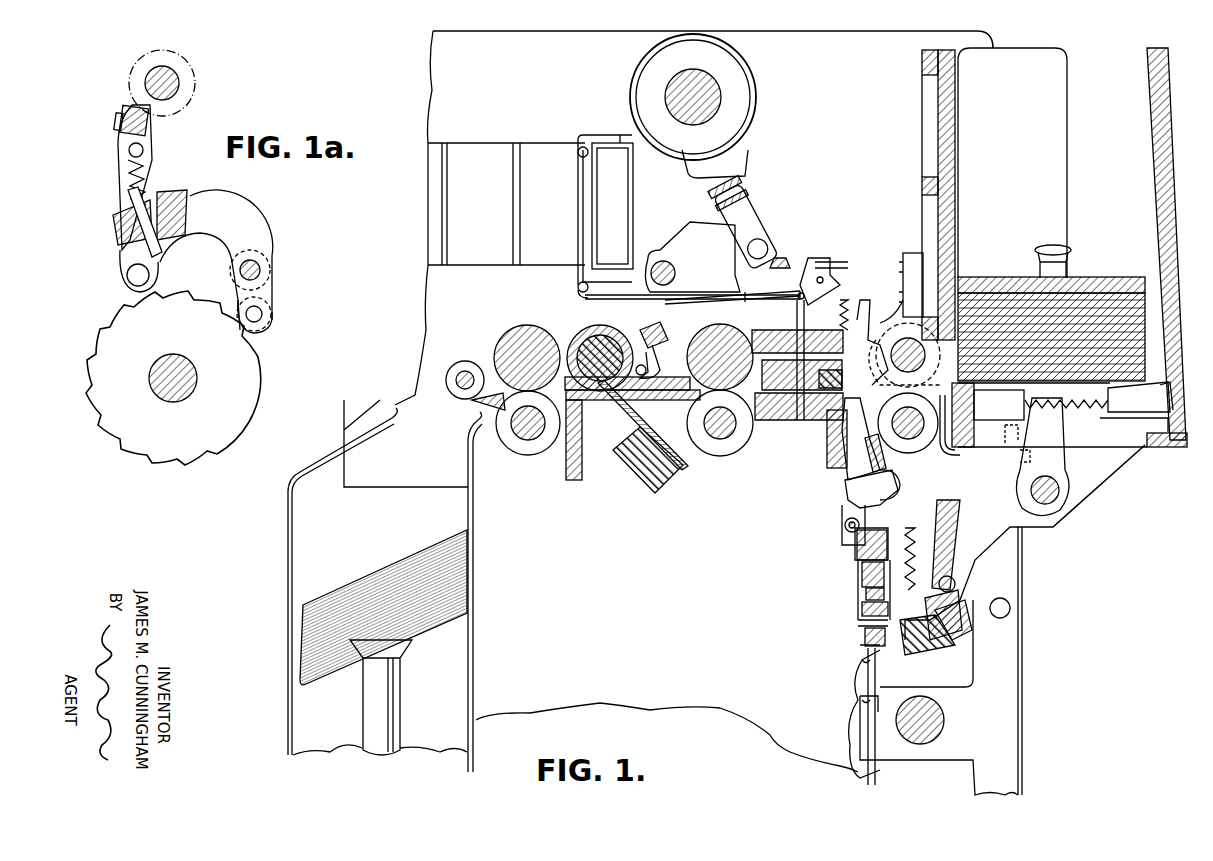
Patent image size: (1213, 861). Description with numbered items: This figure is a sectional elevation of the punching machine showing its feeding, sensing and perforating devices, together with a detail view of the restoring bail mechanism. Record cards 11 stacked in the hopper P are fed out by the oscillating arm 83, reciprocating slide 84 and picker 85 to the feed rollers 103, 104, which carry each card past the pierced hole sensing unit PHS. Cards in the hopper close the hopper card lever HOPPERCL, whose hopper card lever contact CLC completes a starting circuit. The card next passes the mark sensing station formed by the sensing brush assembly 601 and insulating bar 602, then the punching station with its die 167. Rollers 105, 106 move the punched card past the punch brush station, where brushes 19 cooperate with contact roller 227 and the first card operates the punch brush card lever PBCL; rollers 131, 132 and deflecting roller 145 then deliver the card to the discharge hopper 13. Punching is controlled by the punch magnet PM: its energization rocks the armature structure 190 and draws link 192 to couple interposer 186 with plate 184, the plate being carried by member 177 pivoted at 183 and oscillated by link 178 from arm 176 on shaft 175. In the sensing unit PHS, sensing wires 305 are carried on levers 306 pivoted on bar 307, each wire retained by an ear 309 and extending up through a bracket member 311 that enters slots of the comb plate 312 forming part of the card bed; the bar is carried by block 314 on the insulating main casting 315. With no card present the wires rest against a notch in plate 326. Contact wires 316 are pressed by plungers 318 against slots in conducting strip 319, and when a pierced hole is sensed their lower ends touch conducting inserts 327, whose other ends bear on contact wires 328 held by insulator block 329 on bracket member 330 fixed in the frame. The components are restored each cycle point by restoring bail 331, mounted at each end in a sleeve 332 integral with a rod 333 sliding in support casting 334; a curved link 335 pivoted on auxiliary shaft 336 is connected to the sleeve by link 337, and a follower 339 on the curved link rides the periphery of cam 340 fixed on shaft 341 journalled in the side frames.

In FIG. 1A, the feed roller 104 is at (196, 85).
In FIG. 1, the feed roller 104 is at (935, 443).
In FIG. 1A, the restoring bail 331 is at (122, 110).
In FIG. 1, the restoring bail 331 is at (880, 462).
In FIG. 1A, the sleeve 332 is at (116, 118).
In FIG. 1A, the link 337 is at (118, 175).
In FIG. 1A, the support casting 334 is at (114, 224).
In FIG. 1A, the rod 333 is at (160, 256).
In FIG. 1A, the curved link 335 is at (258, 232).
In FIG. 1A, the auxiliary shaft 336 is at (262, 272).
In FIG. 1A, the follower 339 is at (272, 320).
In FIG. 1A, the cam 340 is at (130, 327).
In FIG. 1, the cam 340 is at (845, 700).
In FIG. 1A, the shaft 341 is at (200, 378).
In FIG. 1, the shaft 341 is at (942, 712).
In FIG. 1, the shaft 175 is at (665, 97).
In FIG. 1, the arm 176 is at (745, 157).
In FIG. 1, the link 178 is at (752, 220).
In FIG. 1, the member 177 is at (700, 236).
In FIG. 1, the pivot 183 is at (663, 262).
In FIG. 1, the plate 184 is at (785, 272).
In FIG. 1, the armature structure 190 is at (577, 215).
In FIG. 1, the punch magnet PM is at (612, 206).
In FIG. 1, the link 192 is at (735, 300).
In FIG. 1, the interposer 186 is at (818, 262).
In FIG. 1, the sensing brush assembly 601 is at (828, 430).
In FIG. 1, the roller 131 is at (505, 330).
In FIG. 1, the contact roller 227 is at (583, 330).
In FIG. 1, the punch brush card lever PBCL is at (645, 330).
In FIG. 1, the roller 105 is at (728, 332).
In FIG. 1, the deflecting roller 145 is at (456, 364).
In FIG. 1, the roller 132 is at (512, 452).
In FIG. 1, the roller 106 is at (716, 457).
In FIG. 1, the die 167 is at (773, 436).
In FIG. 1, the brushes 19 is at (620, 410).
In FIG. 1, the plate 326 is at (872, 340).
In FIG. 1, the insulating bar 602 is at (858, 350).
In FIG. 1, the hopper P is at (1100, 234).
In FIG. 1, the record cards 11 is at (330, 592).
In FIG. 1, the discharge hopper 13 is at (445, 709).
In FIG. 1, the feed roller 103 is at (988, 415).
In FIG. 1, the reciprocating slide 84 is at (1139, 397).
In FIG. 1, the picker 85 is at (1160, 384).
In FIG. 1, the comb plate 312 is at (882, 388).
In FIG. 1, the bracket member 311 is at (908, 423).
In FIG. 1, the hopper card lever contact CLC is at (1004, 444).
In FIG. 1, the oscillating arm 83 is at (1028, 490).
In FIG. 1, the hopper card lever HOPPERCL is at (1085, 485).
In FIG. 1, the sensing wires 305 is at (866, 468).
In FIG. 1, the levers 306 is at (852, 490).
In FIG. 1, the ear 309 is at (902, 489).
In FIG. 1, the bar 307 is at (845, 522).
In FIG. 1, the bracket member 330 is at (943, 514).
In FIG. 1, the pierced hole sensing unit PHS is at (840, 531).
In FIG. 1, the block 314 is at (855, 536).
In FIG. 1, the conducting strip 319 is at (858, 572).
In FIG. 1, the contact wires 316 is at (862, 586).
In FIG. 1, the plungers 318 is at (862, 603).
In FIG. 1, the conducting inserts 327 is at (866, 625).
In FIG. 1, the main casting 315 is at (873, 650).
In FIG. 1, the contact wire 328 is at (905, 655).
In FIG. 1, the insulator block 329 is at (940, 655).